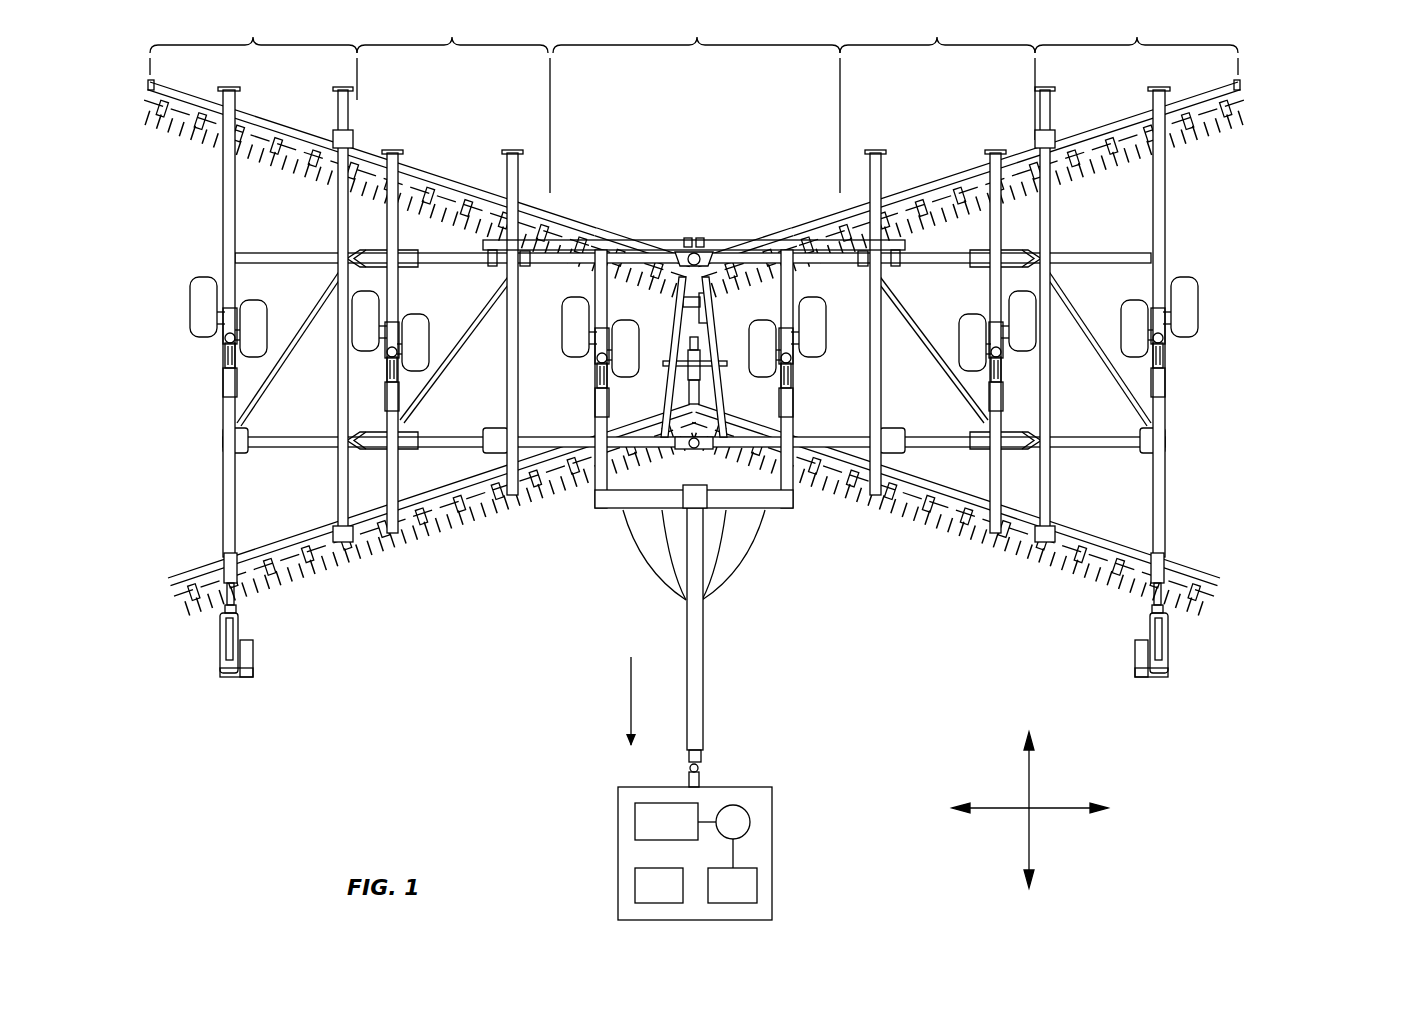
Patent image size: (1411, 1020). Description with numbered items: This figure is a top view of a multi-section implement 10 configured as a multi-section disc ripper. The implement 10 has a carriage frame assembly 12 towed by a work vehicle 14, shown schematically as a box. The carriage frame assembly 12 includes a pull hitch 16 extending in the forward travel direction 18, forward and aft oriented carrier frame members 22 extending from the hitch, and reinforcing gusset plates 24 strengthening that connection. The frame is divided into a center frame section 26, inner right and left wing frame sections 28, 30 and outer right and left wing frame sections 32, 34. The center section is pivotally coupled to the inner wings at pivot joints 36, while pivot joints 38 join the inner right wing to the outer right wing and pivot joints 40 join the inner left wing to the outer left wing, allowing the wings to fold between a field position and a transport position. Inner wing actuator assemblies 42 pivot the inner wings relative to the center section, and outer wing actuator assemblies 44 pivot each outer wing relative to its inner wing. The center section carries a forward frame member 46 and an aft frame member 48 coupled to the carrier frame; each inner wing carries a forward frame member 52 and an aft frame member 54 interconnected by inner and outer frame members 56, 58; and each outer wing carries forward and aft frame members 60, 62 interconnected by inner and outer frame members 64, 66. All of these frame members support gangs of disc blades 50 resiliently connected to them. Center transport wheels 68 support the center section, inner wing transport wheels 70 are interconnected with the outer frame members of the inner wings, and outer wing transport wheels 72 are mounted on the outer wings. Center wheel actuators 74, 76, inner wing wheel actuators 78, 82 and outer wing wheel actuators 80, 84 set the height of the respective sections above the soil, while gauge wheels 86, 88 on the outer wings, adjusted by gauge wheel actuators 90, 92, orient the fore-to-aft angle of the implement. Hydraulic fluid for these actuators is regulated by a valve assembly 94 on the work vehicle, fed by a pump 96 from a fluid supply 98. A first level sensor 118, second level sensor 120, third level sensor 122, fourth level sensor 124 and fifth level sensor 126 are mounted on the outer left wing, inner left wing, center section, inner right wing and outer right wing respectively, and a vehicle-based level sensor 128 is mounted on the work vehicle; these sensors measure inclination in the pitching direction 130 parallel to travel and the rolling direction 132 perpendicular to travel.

The multi-section implement 10 is at (1324, 182).
The carriage frame assembly 12 is at (784, 518).
The work vehicle 14 is at (776, 857).
The pull hitch 16 is at (706, 712).
The forward travel direction 18 is at (630, 693).
The carrier frame members 22 is at (598, 490).
The reinforcing gusset plates 24 is at (672, 570).
The center frame section 26 is at (696, 29).
The inner right wing frame section 28 is at (995, 215).
The inner left wing frame section 30 is at (392, 215).
The outer right wing frame section 32 is at (1136, 29).
The outer left wing frame section 34 is at (253, 29).
The pivot joints 36 is at (603, 213).
The pivot joints 38 is at (1040, 146).
The pivot joints 40 is at (355, 138).
The inner wing actuator assemblies 42 is at (628, 228).
The outer wing actuator assemblies 44 is at (445, 255).
The forward frame member 46 is at (627, 457).
The aft frame member 48 is at (670, 236).
The gangs of disc blades 50 is at (268, 112).
The forward frame member 52 is at (490, 500).
The aft frame member 54 is at (418, 165).
The inner frame member 56 is at (507, 347).
The outer frame member 58 is at (398, 300).
The forward frame member 60 is at (206, 596).
The aft frame member 62 is at (200, 120).
The inner frame member 64 is at (342, 480).
The outer frame member 66 is at (225, 488).
The center transport wheels 68 is at (563, 358).
The inner wing transport wheels 70 is at (414, 378).
The outer wing transport wheels 72 is at (206, 347).
The center wheel actuator 74 is at (610, 417).
The center wheel actuator 76 is at (782, 405).
The inner wing wheel actuator 78 is at (990, 395).
The outer wing wheel actuator 80 is at (1167, 383).
The inner wing wheel actuator 82 is at (388, 392).
The outer wing wheel actuator 84 is at (223, 383).
The gauge wheel 86 is at (1183, 662).
The gauge wheel 88 is at (222, 663).
The gauge wheel actuator 90 is at (1163, 557).
The gauge wheel actuator 92 is at (228, 567).
The valve assembly 94 is at (640, 822).
The pump 96 is at (750, 822).
The fluid supply 98 is at (750, 887).
The first level sensor 118 is at (222, 447).
The second level sensor 120 is at (488, 448).
The third level sensor 122 is at (690, 497).
The fourth level sensor 124 is at (910, 453).
The fifth level sensor 126 is at (1167, 442).
The vehicle-based level sensor 128 is at (640, 892).
The pitching direction 130 is at (1030, 788).
The rolling direction 132 is at (1057, 810).